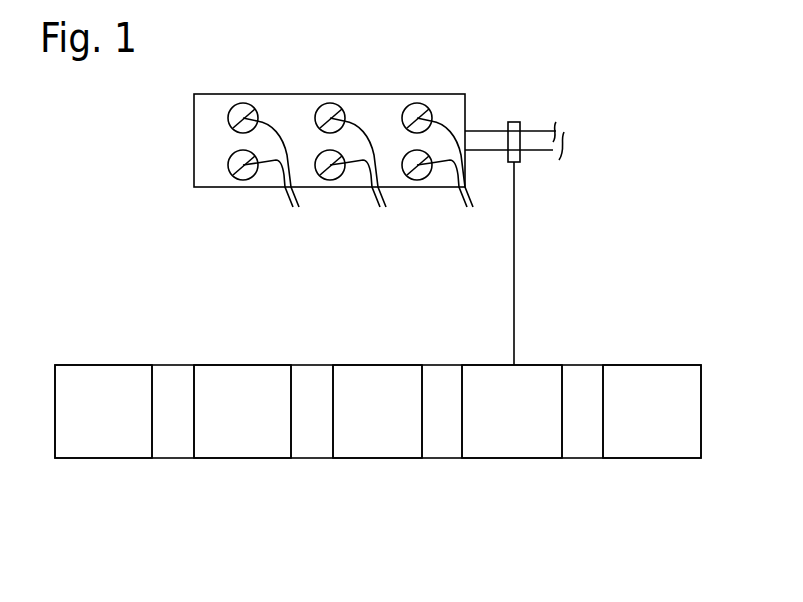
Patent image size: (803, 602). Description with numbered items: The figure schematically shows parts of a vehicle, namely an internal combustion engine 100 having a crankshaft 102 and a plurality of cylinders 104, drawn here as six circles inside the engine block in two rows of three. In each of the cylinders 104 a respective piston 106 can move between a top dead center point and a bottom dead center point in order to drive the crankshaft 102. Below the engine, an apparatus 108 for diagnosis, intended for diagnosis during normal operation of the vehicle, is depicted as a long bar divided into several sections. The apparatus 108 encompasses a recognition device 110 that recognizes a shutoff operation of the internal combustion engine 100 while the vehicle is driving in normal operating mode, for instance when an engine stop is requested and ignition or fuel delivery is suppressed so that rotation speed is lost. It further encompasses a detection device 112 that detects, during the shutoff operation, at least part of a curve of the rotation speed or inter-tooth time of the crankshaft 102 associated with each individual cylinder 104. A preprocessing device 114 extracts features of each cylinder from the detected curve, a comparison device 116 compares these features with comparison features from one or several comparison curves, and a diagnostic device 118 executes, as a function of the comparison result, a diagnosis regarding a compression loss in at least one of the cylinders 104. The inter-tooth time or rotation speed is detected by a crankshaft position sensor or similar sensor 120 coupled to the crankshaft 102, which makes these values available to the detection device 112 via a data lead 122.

The internal combustion engine 100 is at (194, 140).
The crankshaft 102 is at (541, 127).
The cylinders 104 is at (246, 103).
The pistons 106 is at (374, 185).
The apparatus for diagnosis 108 is at (368, 361).
The recognition device 110 is at (644, 450).
The detection device 112 is at (512, 450).
The preprocessing device 114 is at (376, 450).
The comparison device 116 is at (246, 450).
The diagnostic device 118 is at (115, 450).
The crankshaft position sensor 120 is at (514, 122).
The data lead 122 is at (515, 283).